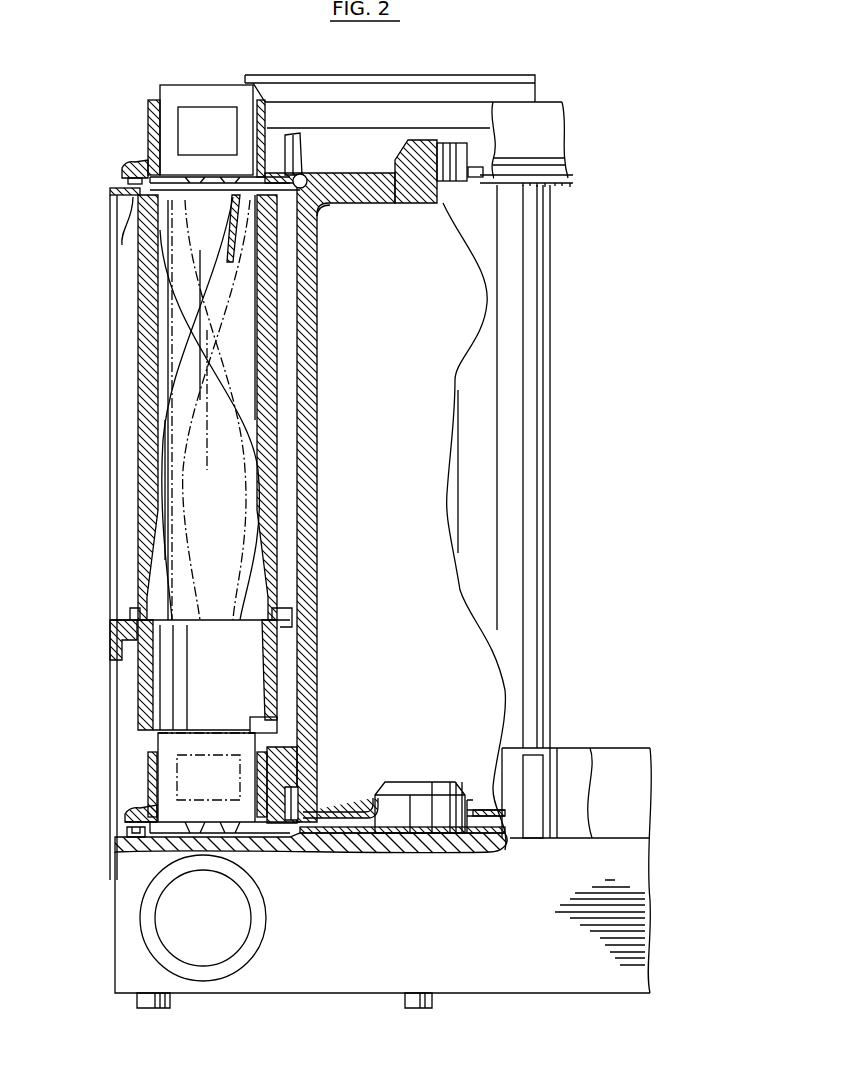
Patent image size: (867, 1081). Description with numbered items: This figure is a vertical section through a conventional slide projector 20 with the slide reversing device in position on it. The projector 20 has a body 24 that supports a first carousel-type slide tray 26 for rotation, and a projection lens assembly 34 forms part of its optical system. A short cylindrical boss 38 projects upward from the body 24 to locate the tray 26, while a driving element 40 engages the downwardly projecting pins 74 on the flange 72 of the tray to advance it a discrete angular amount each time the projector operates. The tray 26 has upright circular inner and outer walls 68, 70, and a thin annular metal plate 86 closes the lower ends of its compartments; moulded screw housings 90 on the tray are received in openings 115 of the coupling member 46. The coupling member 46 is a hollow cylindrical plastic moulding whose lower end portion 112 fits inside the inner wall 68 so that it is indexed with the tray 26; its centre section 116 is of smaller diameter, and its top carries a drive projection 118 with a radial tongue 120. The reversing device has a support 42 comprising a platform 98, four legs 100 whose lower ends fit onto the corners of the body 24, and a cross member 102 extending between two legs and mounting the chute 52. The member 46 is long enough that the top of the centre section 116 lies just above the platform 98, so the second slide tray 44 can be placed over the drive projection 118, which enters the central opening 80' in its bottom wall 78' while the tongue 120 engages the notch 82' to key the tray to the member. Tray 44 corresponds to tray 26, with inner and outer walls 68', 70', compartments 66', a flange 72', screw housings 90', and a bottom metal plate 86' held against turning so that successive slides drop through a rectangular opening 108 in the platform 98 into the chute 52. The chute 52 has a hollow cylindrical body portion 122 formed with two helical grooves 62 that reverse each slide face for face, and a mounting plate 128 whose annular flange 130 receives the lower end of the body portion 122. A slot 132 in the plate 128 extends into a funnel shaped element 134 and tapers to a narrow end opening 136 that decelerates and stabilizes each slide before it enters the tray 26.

The slide projector 20 is at (110, 915).
The projector body 24 is at (417, 910).
The slide tray 26 is at (622, 745).
The projection lens assembly 34 is at (258, 957).
The boss 38 is at (408, 792).
The driving element 40 is at (473, 825).
The support 42 is at (97, 534).
The second slide tray 44 is at (578, 112).
The coupling member 46 is at (542, 345).
The chute 52 is at (106, 325).
The grooves 62 is at (180, 447).
The slide-receiving compartments 66' is at (196, 111).
The inner wall 68 is at (304, 776).
The inner wall 68' is at (292, 111).
The outer wall 70 is at (143, 784).
The outer wall 70' is at (136, 133).
The flange 72 is at (122, 798).
The flange 72' is at (115, 162).
The pins 74 is at (127, 833).
The bottom wall 78' is at (333, 479).
The central opening 80' is at (360, 216).
The notch 82' is at (508, 146).
The metal plate 86 is at (340, 802).
The metal plate 86' is at (327, 162).
The screw housings 90 is at (300, 831).
The screw housings 90' is at (318, 138).
The platform 98 is at (120, 243).
The legs 100 is at (116, 386).
The cross member 102 is at (110, 632).
The rectangular opening 108 is at (255, 196).
The lower end portion 112 is at (568, 758).
The openings 115 is at (295, 797).
The centre section 116 is at (550, 605).
The drive projection 118 is at (415, 165).
The tongue 120 is at (466, 185).
The body portion 122 is at (270, 410).
The mounting plate 128 is at (125, 612).
The annular flange 130 is at (285, 616).
The slot 132 is at (163, 640).
The funnel shaped element 134 is at (272, 680).
The end opening 136 is at (270, 723).